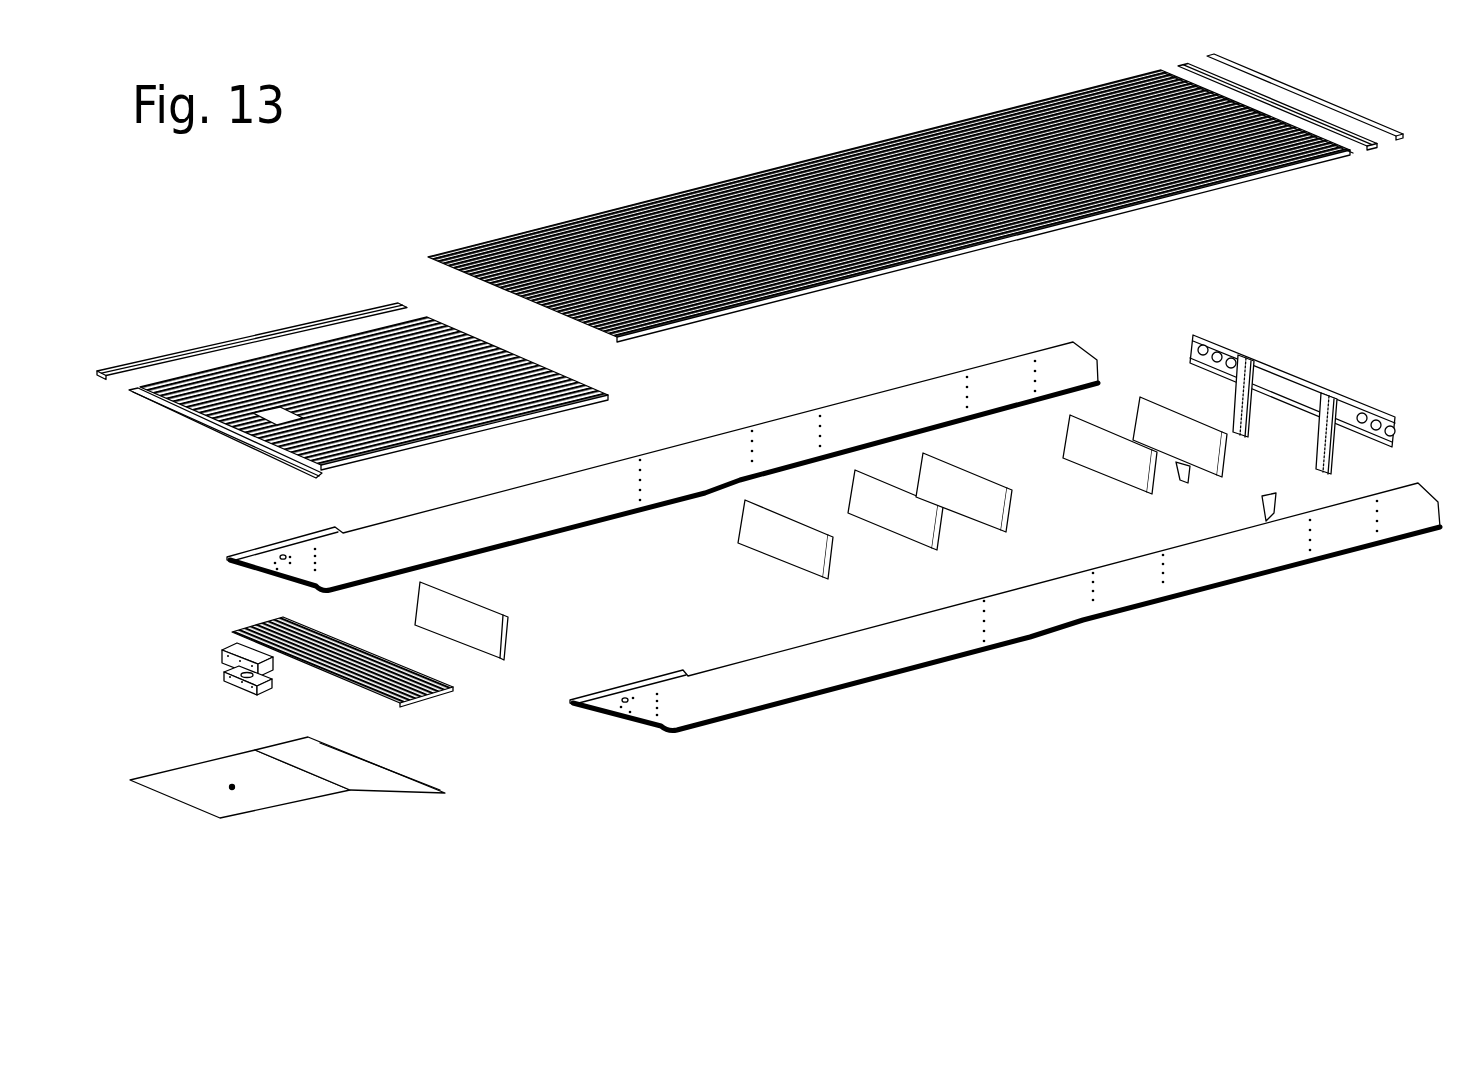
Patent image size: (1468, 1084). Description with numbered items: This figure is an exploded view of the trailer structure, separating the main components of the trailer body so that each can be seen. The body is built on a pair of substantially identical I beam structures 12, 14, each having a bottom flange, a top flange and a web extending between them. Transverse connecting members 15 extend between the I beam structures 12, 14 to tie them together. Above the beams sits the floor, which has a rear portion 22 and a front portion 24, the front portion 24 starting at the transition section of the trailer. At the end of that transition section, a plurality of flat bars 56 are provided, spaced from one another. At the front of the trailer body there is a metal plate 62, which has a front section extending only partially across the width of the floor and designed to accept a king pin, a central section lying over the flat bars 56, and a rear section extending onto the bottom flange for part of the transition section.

The I beam structure 12 is at (1018, 680).
The I beam structure 14 is at (785, 397).
The transverse connecting member 15 is at (505, 633).
The floor rear portion 22 is at (727, 162).
The floor front portion 24 is at (242, 307).
The flat bar 56 is at (440, 692).
The metal plate 62 is at (330, 826).